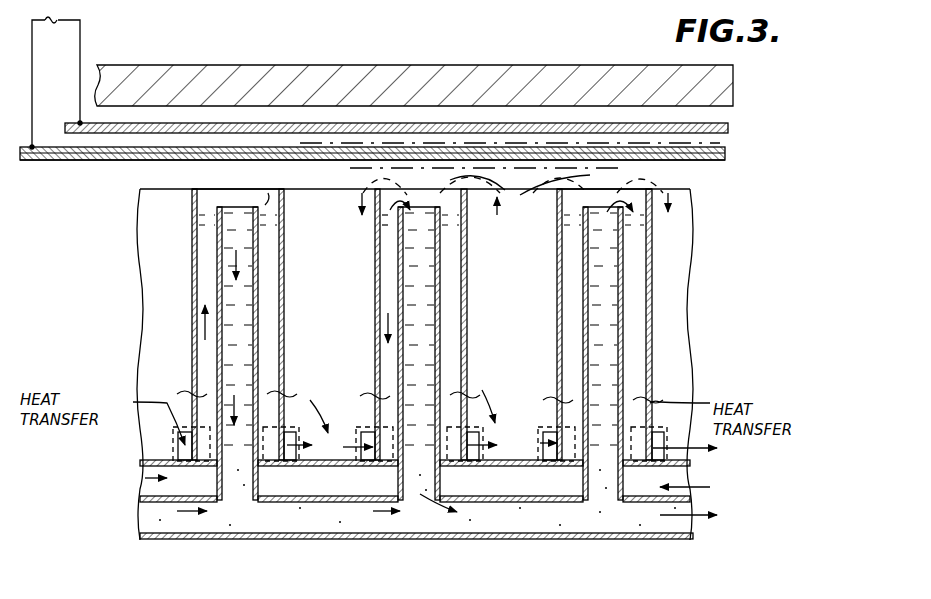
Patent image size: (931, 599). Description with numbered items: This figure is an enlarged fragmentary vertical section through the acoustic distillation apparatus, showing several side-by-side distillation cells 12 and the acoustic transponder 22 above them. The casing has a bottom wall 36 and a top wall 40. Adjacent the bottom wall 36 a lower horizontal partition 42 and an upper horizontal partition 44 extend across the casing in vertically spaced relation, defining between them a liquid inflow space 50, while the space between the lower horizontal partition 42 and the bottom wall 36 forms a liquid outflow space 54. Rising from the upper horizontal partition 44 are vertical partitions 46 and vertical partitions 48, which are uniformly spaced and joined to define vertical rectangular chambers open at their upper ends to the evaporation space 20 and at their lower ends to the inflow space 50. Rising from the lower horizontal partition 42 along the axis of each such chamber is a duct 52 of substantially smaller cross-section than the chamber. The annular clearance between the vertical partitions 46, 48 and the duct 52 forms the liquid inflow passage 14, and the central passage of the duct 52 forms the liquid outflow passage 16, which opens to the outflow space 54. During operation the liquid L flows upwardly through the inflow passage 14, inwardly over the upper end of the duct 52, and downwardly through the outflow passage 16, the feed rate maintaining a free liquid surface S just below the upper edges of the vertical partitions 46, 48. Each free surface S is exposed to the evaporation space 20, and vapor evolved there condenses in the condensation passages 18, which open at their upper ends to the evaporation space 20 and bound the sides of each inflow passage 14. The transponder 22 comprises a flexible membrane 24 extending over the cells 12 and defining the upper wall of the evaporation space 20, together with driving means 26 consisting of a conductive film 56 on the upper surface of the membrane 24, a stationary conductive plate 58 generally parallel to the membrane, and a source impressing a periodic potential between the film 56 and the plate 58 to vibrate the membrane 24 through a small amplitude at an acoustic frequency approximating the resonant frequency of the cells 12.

The distillation cell 12 is at (278, 185).
The liquid inflow passage 14 is at (203, 353).
The liquid outflow passage 16 is at (236, 292).
The condensation passage 18 is at (150, 293).
The evaporation space 20 is at (515, 211).
The acoustic transponder 22 is at (437, 124).
The flexible membrane 24 is at (107, 160).
The membrane driving means 26 is at (92, 42).
The bottom wall 36 is at (355, 534).
The top wall 40 is at (435, 90).
The lower horizontal partition 42 is at (277, 503).
The upper horizontal partition 44 is at (510, 470).
The vertical partition 46 is at (292, 200).
The vertical partition 48 is at (226, 196).
The liquid inflow space 50 is at (148, 478).
The duct 52 is at (258, 250).
The liquid outflow space 54 is at (160, 514).
The conductive film 56 is at (180, 147).
The conductive plate 58 is at (123, 120).
The free liquid surface S is at (268, 200).
The liquid L is at (660, 474).